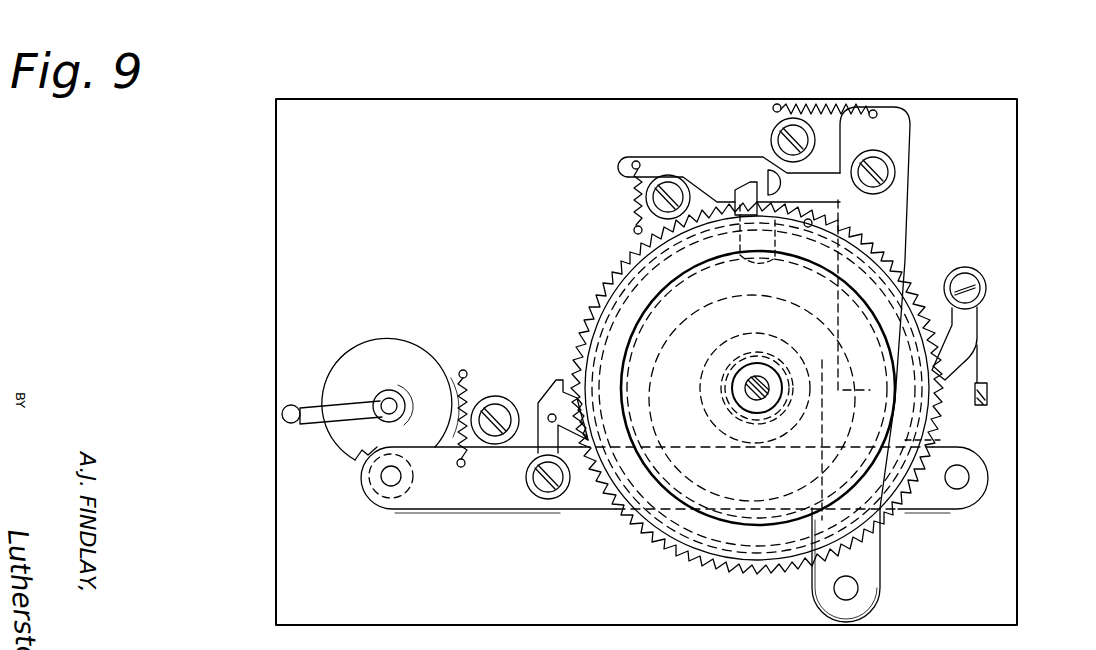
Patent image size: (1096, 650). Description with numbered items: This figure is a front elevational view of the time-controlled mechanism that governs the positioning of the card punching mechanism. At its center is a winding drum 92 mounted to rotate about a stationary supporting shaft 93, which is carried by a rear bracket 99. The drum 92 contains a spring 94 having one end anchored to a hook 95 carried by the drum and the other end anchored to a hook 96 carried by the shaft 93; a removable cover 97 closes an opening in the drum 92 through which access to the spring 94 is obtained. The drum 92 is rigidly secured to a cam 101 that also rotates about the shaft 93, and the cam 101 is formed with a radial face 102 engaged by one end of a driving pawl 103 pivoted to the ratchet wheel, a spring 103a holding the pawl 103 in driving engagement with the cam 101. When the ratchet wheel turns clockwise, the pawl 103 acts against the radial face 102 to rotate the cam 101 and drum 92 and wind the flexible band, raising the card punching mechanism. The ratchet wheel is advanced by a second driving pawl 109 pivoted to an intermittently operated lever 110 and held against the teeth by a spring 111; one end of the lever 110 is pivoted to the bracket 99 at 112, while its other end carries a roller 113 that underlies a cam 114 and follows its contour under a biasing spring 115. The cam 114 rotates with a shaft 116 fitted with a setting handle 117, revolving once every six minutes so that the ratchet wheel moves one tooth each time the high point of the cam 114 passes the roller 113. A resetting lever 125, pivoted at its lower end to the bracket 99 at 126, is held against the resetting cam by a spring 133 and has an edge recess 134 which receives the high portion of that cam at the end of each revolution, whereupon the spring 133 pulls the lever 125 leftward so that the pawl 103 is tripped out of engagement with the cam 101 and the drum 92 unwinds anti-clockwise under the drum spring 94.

The winding drum 92 is at (945, 420).
The stationary supporting shaft 93 is at (760, 382).
The spring 94 is at (722, 372).
The hook 95 is at (690, 342).
The hook 96 is at (726, 388).
The removable cover 97 is at (890, 279).
The rear bracket 99 is at (547, 99).
The cam 101 is at (750, 297).
The radial face 102 is at (833, 330).
The driving pawl 103 is at (760, 214).
The spring 103a is at (812, 223).
The driving pawl 109 is at (553, 386).
The intermittently operated lever 110 is at (518, 509).
The spring 111 is at (583, 440).
The pivot 112 is at (960, 478).
The roller 113 is at (385, 505).
The cam 114 is at (360, 357).
The biasing spring 115 is at (468, 378).
The shaft 116 is at (391, 402).
The setting handle 117 is at (285, 420).
The resetting lever 125 is at (905, 122).
The pivot 126 is at (876, 172).
The spring 133 is at (830, 107).
The edge recess 134 is at (942, 440).